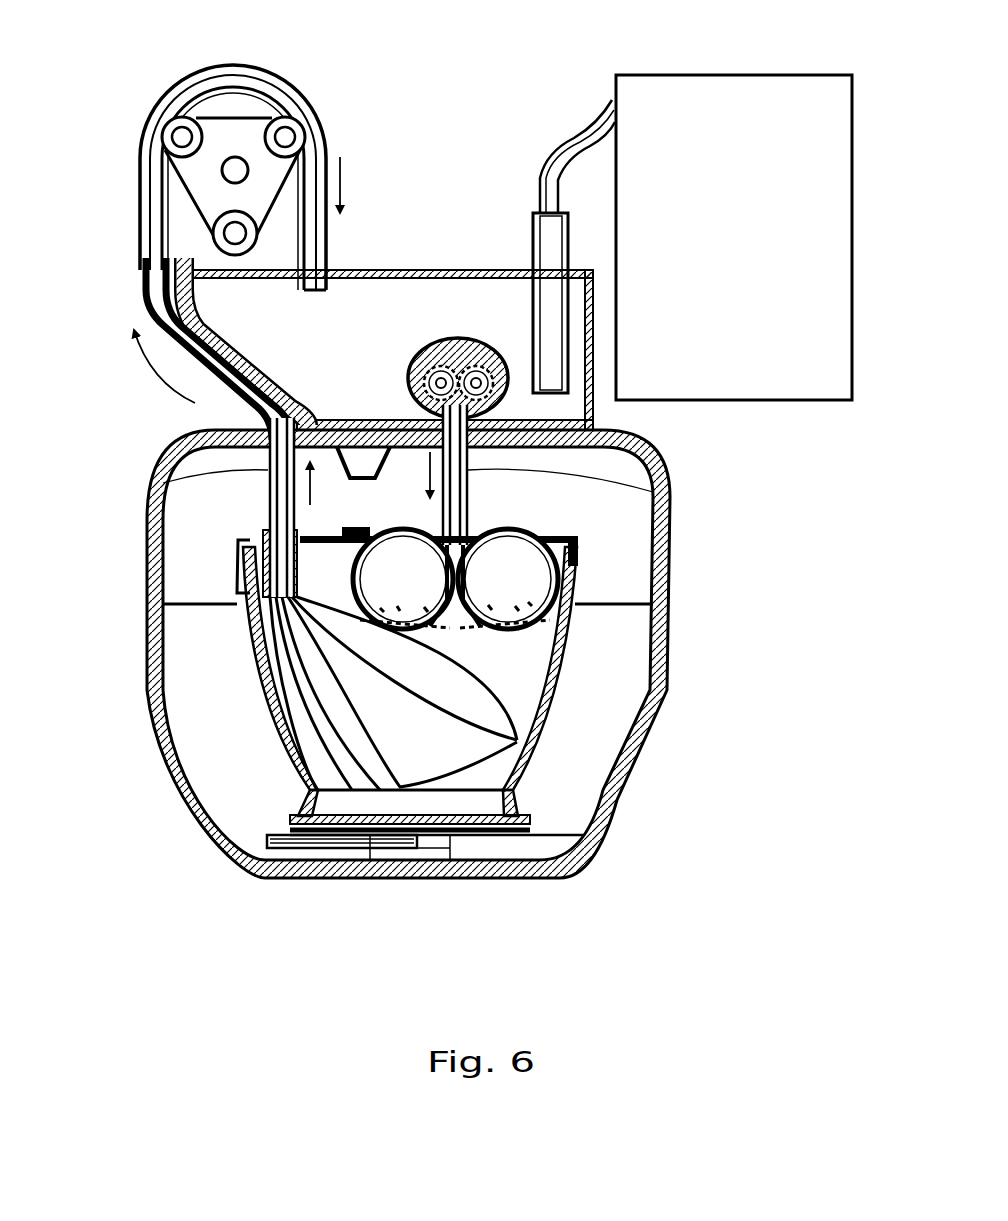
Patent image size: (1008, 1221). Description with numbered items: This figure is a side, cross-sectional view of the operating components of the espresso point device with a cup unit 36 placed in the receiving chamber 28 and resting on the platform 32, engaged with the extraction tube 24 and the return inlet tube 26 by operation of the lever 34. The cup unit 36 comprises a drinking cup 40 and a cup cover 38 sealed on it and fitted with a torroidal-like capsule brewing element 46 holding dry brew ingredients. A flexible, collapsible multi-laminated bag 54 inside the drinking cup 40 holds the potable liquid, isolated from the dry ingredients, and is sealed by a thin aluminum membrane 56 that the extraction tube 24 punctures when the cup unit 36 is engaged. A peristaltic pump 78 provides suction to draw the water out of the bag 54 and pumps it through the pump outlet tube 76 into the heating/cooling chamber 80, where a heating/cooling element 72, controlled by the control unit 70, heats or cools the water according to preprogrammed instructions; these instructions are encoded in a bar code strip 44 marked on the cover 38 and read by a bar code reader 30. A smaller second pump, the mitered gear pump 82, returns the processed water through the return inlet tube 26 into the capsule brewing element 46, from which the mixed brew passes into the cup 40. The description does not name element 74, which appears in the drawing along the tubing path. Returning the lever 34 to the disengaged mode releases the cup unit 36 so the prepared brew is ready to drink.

The extraction tube 24 is at (268, 476).
The return inlet tube 26 is at (468, 472).
The receiving chamber 28 is at (672, 607).
The bar code reader 30 is at (381, 461).
The platform 32 is at (532, 824).
The lever 34 is at (333, 848).
The cup unit 36 is at (604, 576).
The cup cover 38 is at (558, 531).
The drinking cup 40 is at (548, 718).
The bar code strip 44 is at (346, 524).
The capsule brewing element 46 is at (550, 606).
The multi-laminated bag 54 is at (323, 745).
The aluminum membrane 56 is at (278, 597).
The control unit 70 is at (734, 237).
The heating/cooling element 72 is at (532, 250).
The return tube 74 is at (146, 216).
The pump outlet tube 76 is at (345, 272).
The peristaltic pump 78 is at (236, 130).
The heating/cooling chamber 80 is at (396, 268).
The mitered gear pump 82 is at (441, 338).